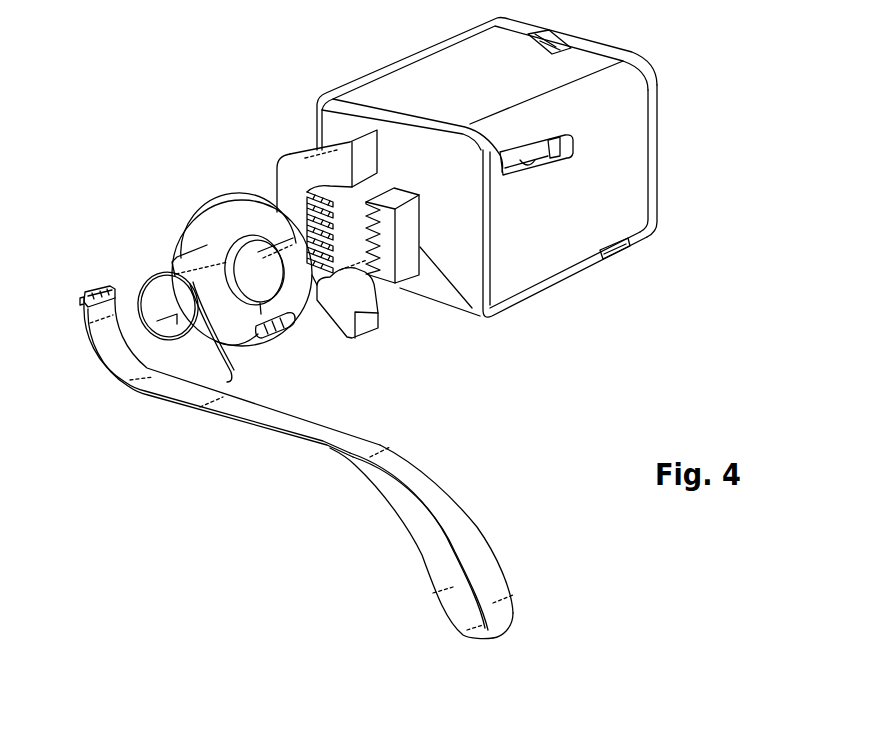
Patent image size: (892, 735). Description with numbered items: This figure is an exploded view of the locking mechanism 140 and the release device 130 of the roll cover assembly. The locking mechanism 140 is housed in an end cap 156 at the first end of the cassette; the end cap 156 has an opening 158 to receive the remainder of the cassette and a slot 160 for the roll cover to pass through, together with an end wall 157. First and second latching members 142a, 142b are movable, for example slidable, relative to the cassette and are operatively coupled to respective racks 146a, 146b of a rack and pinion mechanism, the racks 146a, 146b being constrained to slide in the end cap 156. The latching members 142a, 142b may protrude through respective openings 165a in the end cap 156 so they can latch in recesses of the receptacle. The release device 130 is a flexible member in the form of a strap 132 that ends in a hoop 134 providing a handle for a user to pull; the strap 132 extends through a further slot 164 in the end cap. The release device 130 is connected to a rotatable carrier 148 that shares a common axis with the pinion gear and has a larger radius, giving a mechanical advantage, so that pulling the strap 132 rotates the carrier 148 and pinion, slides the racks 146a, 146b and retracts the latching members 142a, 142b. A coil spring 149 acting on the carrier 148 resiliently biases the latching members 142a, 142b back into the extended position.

The release device 130 is at (417, 457).
The strap 132 is at (462, 491).
The hoop 134 is at (513, 582).
The locking mechanism 140 is at (538, 320).
The first latching member 142a is at (340, 153).
The second latching member 142b is at (340, 312).
The first rack 146a is at (289, 207).
The second rack 146b is at (381, 285).
The rotatable carrier 148 is at (176, 256).
The coil spring 149 is at (140, 282).
The end cap 156 is at (634, 183).
The end wall 157 is at (650, 122).
The opening 158 is at (337, 106).
The slot 160 is at (502, 163).
The further slot 164 is at (610, 250).
The opening 165a is at (551, 33).